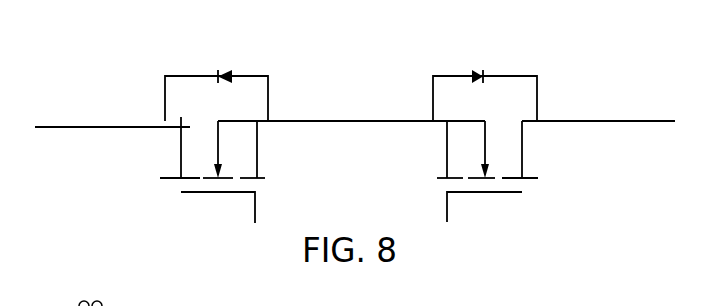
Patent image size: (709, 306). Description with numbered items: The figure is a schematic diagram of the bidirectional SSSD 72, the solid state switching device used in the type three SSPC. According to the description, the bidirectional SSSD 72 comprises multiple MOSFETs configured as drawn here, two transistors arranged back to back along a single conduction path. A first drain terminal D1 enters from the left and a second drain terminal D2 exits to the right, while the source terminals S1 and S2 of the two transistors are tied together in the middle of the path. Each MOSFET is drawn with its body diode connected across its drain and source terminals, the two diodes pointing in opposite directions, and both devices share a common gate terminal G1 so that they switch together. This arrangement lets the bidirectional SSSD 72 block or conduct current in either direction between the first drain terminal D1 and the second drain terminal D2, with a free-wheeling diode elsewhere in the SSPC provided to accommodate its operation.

The bidirectional SSSD 72 is at (355, 118).
The first drain terminal D1 is at (112, 110).
The first transistor source terminal S1 is at (255, 124).
The second transistor source terminal S2 is at (444, 124).
The second drain terminal D2 is at (598, 107).
The gate terminal G1 is at (351, 209).